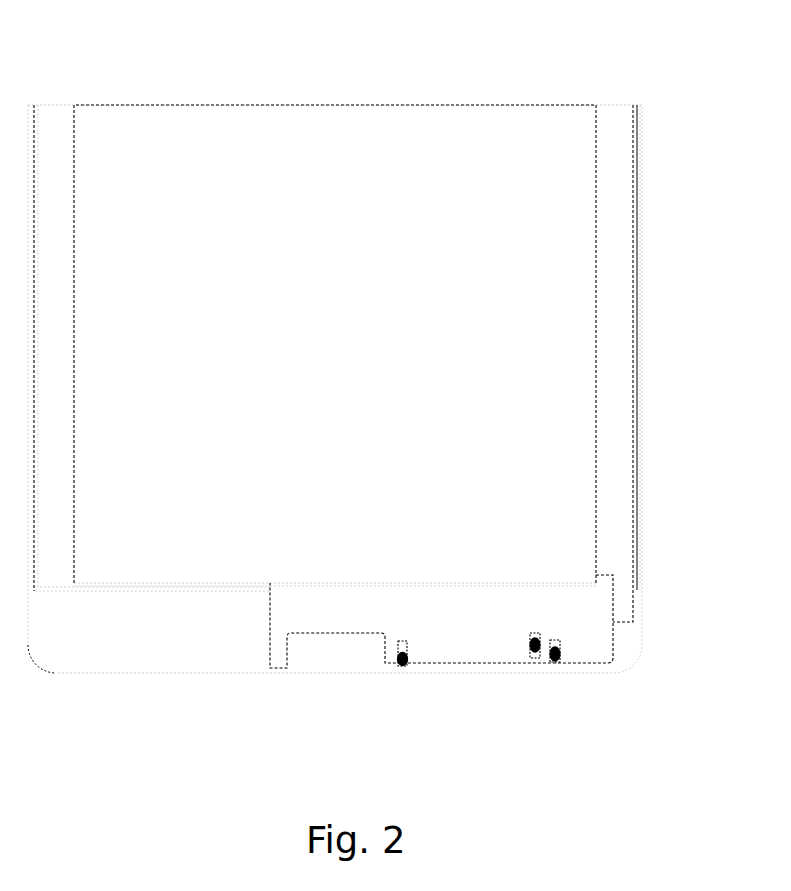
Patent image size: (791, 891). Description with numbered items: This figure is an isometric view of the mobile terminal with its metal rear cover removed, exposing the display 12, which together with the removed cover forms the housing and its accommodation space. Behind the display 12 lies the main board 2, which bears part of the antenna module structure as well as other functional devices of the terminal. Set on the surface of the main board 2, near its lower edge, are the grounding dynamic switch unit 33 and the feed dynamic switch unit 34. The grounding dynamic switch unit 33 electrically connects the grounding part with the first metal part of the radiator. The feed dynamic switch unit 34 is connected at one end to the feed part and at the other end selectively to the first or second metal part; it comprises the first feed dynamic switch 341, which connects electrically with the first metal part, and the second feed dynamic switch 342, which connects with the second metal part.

The display 12 is at (647, 165).
The main board 2 is at (600, 637).
The grounding dynamic switch unit 33 is at (399, 663).
The feed dynamic switch unit 34 is at (562, 713).
The first feed dynamic switch 341 is at (557, 652).
The second feed dynamic switch 342 is at (533, 658).